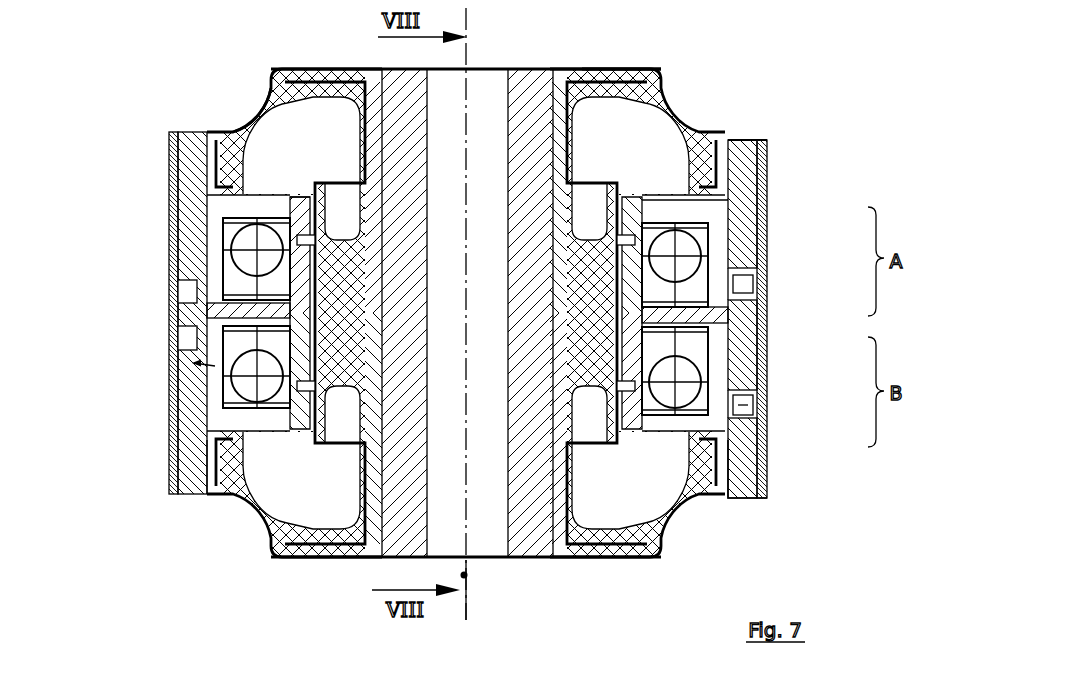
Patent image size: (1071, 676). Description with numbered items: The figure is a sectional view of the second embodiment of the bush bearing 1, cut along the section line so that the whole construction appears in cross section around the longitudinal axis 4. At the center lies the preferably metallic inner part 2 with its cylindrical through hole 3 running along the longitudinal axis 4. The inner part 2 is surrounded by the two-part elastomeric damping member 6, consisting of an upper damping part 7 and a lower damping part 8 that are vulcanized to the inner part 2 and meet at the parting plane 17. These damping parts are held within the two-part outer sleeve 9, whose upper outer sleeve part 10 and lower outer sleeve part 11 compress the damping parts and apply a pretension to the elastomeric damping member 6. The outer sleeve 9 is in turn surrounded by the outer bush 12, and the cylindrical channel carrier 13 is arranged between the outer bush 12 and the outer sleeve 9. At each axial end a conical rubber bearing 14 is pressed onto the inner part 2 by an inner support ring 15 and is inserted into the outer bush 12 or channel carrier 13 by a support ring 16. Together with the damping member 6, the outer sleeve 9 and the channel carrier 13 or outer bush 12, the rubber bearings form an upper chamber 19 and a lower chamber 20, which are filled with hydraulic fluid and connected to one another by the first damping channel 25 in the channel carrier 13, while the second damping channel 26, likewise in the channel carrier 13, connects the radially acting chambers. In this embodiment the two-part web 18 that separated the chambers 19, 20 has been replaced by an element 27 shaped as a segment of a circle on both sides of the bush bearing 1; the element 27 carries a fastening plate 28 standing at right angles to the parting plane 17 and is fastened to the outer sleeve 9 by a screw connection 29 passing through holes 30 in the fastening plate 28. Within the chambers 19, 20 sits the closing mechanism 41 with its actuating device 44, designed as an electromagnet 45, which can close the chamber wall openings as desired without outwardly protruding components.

The bush bearing 1 is at (745, 88).
The inner part 2 is at (530, 133).
The through hole 3 is at (480, 100).
The longitudinal axis 4 is at (464, 575).
The elastomeric damping member 6 is at (168, 158).
The upper damping part 7 is at (297, 212).
The lower damping part 8 is at (350, 358).
The outer sleeve 9 is at (650, 250).
The upper outer sleeve part 10 is at (700, 287).
The lower outer sleeve part 11 is at (665, 517).
The outer bush 12 is at (763, 213).
The channel carrier 13 is at (743, 170).
The conical rubber bearing 14 is at (662, 122).
The inner support ring 15 is at (620, 78).
The support ring 16 is at (732, 138).
The parting plane 17 is at (643, 231).
The web 18 is at (245, 292).
The upper chamber 19 is at (283, 152).
The lower chamber 20 is at (262, 509).
The first damping channel 25 is at (186, 338).
The second damping channel 26 is at (188, 289).
The element 27 is at (660, 372).
The fastening plate 28 is at (258, 166).
The screw connection 29 is at (753, 432).
The holes 30 is at (753, 403).
The closing mechanism 41 is at (252, 355).
The actuating device 44 is at (228, 426).
The electromagnet 45 is at (208, 397).